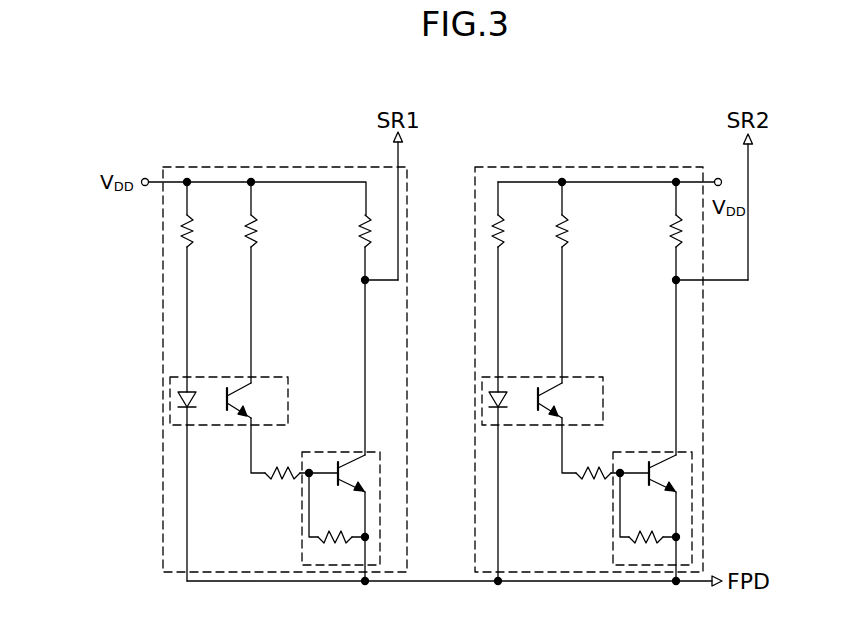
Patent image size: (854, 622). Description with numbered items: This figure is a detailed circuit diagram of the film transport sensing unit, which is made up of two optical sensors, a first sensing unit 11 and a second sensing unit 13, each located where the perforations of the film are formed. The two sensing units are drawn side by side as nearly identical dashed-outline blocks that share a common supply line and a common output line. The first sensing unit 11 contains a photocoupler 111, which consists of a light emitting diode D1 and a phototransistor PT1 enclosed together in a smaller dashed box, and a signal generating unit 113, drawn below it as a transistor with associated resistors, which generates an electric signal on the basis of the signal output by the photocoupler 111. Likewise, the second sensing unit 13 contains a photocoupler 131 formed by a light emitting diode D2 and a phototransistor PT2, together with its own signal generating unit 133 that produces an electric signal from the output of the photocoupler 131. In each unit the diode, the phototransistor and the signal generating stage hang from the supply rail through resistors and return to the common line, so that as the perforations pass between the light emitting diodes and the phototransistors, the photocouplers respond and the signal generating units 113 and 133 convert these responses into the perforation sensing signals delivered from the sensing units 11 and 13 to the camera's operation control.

The first sensing unit 11 is at (222, 167).
The second sensing unit 13 is at (616, 167).
The photocoupler 111 is at (290, 400).
The signal generating unit 113 is at (302, 527).
The photocoupler 131 is at (603, 400).
The signal generating unit 133 is at (613, 527).
The light emitting diode D1 is at (215, 398).
The light emitting diode D2 is at (526, 398).
The phototransistor PT1 is at (256, 400).
The phototransistor PT2 is at (567, 400).